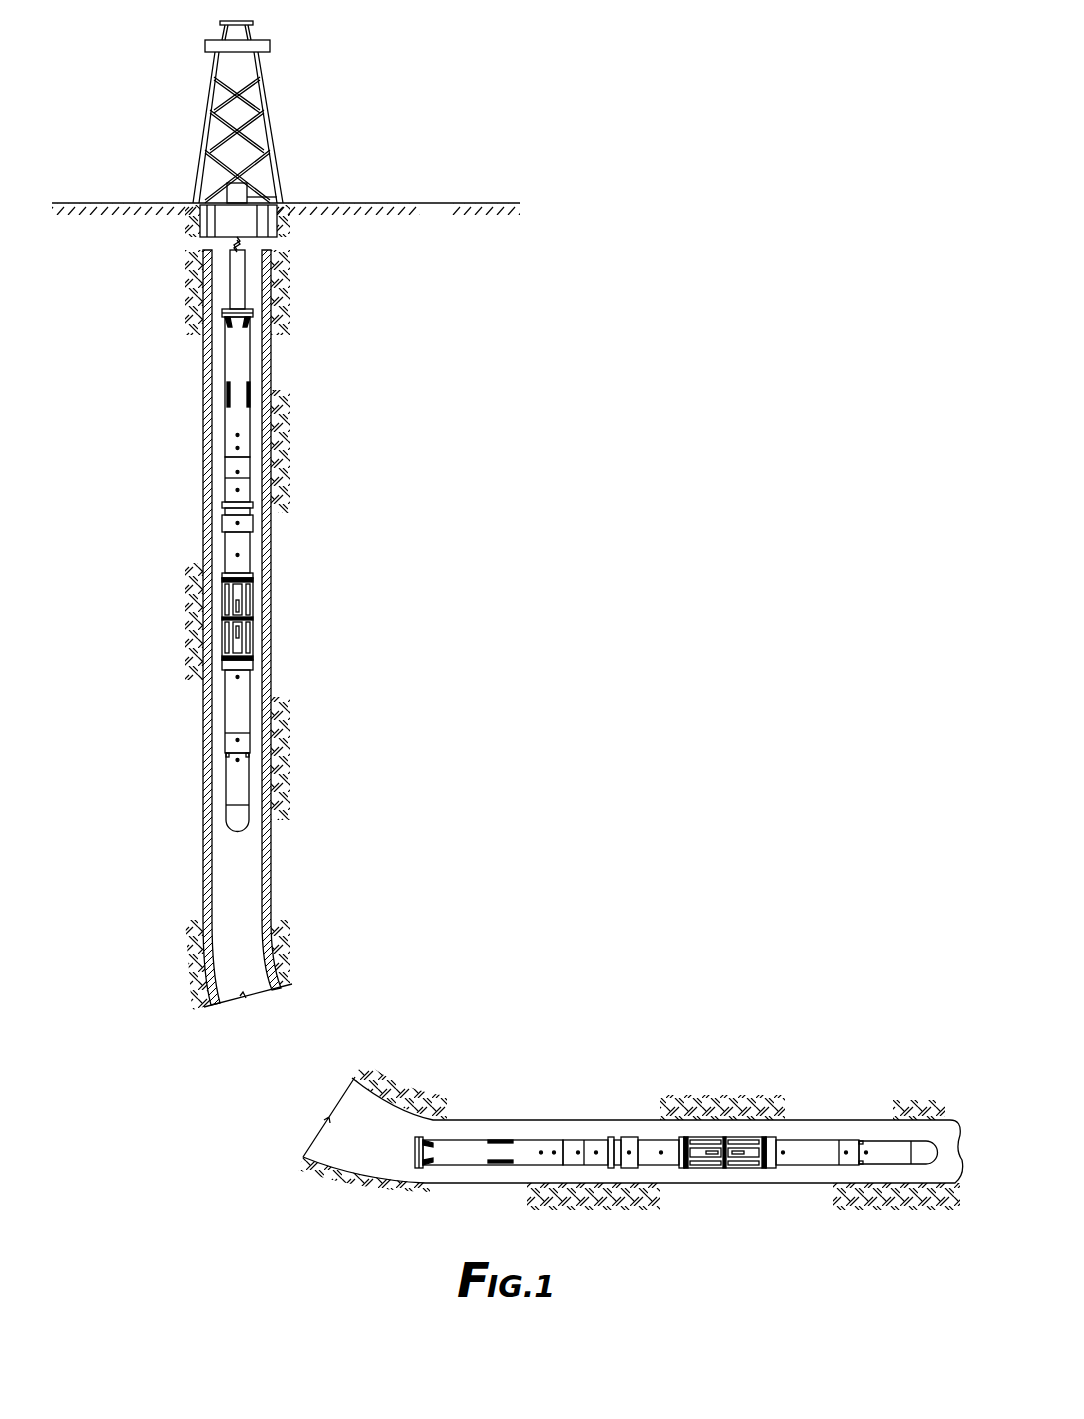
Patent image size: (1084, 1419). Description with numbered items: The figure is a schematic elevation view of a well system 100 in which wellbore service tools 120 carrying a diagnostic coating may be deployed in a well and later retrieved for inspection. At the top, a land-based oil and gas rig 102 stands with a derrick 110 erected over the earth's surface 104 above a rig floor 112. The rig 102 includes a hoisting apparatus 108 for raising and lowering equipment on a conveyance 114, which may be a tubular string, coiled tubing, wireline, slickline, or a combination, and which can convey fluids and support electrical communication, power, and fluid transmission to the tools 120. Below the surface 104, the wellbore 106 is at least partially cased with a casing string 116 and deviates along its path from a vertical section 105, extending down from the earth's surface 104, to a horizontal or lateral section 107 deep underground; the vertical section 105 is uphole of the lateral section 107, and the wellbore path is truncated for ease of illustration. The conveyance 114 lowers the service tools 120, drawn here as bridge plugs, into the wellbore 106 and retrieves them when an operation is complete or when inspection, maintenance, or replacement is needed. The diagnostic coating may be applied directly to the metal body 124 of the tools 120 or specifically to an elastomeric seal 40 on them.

The well system 100 is at (113, 152).
The oil and gas rig 102 is at (340, 50).
The earth's surface 104 is at (205, 203).
The vertical section 105 is at (138, 551).
The wellbore 106 is at (266, 450).
The horizontal or lateral section 107 is at (548, 1036).
The hoisting apparatus 108 is at (390, 542).
The derrick 110 is at (267, 95).
The rig floor 112 is at (275, 200).
The conveyance 114 is at (245, 282).
The casing string 116 is at (203, 373).
The wellbore service tool 120 is at (250, 418).
The metal body 124 is at (225, 461).
The elastomeric seal 40 is at (223, 523).